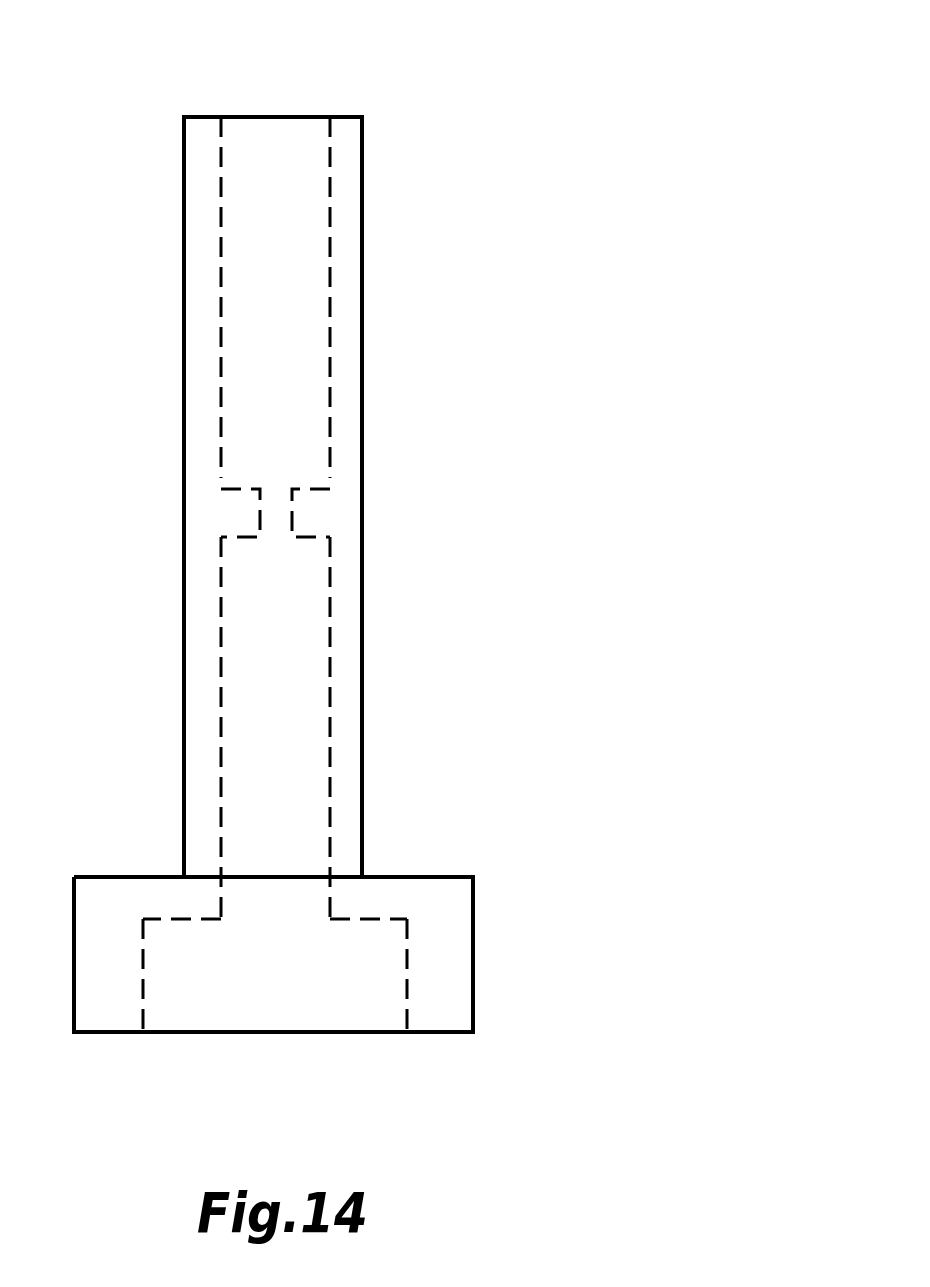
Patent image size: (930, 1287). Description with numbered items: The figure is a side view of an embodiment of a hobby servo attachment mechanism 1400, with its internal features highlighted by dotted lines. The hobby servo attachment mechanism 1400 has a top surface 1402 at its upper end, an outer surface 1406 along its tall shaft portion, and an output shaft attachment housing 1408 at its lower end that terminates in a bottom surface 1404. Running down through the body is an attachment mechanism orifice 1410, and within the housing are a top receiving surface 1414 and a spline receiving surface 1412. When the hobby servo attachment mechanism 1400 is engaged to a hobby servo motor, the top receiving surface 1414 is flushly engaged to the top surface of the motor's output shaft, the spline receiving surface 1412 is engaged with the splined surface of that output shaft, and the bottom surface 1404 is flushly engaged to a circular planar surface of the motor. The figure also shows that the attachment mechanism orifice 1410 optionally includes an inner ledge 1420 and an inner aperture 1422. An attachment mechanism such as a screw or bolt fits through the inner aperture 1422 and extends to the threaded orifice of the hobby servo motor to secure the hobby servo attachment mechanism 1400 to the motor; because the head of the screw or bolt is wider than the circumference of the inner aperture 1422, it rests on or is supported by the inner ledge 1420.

The hobby servo attachment mechanism 1400 is at (638, 124).
The top surface 1402 is at (346, 115).
The bottom surface 1404 is at (441, 1032).
The outer surface 1406 is at (355, 345).
The output shaft attachment housing 1408 is at (468, 935).
The attachment mechanism orifice 1410 is at (283, 275).
The spline receiving surface 1412 is at (410, 988).
The top receiving surface 1414 is at (373, 917).
The inner ledge 1420 is at (305, 503).
The inner aperture 1422 is at (272, 500).